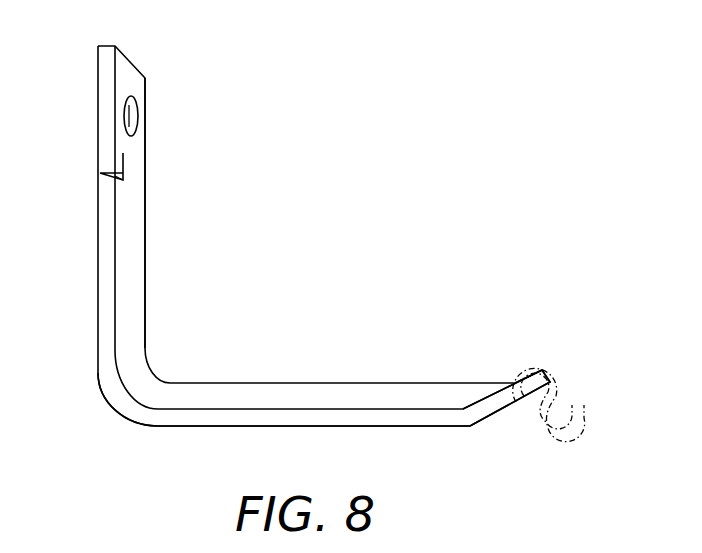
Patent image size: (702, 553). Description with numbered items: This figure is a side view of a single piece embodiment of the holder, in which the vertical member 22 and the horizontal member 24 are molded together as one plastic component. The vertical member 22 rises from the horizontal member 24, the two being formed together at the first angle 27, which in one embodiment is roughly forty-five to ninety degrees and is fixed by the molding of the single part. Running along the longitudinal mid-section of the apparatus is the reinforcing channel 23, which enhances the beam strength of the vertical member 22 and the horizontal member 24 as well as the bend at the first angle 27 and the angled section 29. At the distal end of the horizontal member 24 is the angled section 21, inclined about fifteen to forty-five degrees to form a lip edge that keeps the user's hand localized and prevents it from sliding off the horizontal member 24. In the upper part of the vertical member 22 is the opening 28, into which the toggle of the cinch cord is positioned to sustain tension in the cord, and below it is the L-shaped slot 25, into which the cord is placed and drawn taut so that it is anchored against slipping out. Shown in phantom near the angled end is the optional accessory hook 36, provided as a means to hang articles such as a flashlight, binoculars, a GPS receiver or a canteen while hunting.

The angled section 21 is at (538, 353).
The vertical member 22 is at (145, 255).
The reinforcing channel 23 is at (133, 192).
The horizontal member 24 is at (288, 426).
The L-shaped slot 25 is at (117, 172).
The first angle 27 is at (143, 390).
The opening 28 is at (138, 117).
The angled section 29 is at (483, 420).
The accessory hook 36 is at (575, 392).